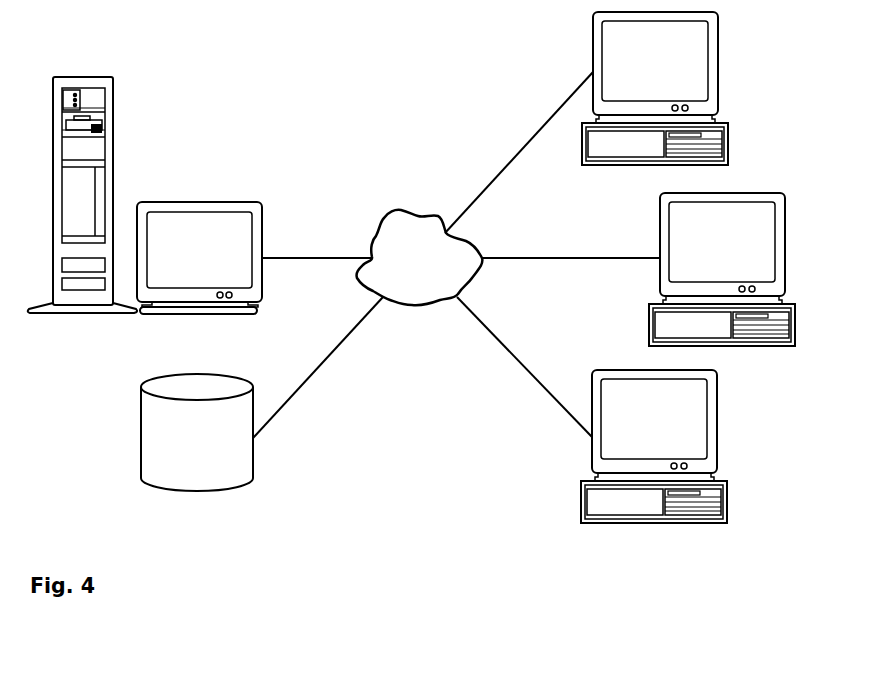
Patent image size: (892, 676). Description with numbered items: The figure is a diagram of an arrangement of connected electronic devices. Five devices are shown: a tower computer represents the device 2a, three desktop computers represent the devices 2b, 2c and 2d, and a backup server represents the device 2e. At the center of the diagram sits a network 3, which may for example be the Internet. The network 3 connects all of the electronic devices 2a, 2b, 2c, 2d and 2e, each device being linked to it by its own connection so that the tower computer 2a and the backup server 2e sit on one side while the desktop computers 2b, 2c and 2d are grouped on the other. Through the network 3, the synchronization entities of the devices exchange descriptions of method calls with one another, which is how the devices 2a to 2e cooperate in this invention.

The tower computer 2a is at (200, 195).
The desktop computer 2b is at (611, 122).
The desktop computer 2c is at (661, 269).
The desktop computer 2d is at (615, 410).
The backup server 2e is at (262, 394).
The network 3 is at (420, 257).